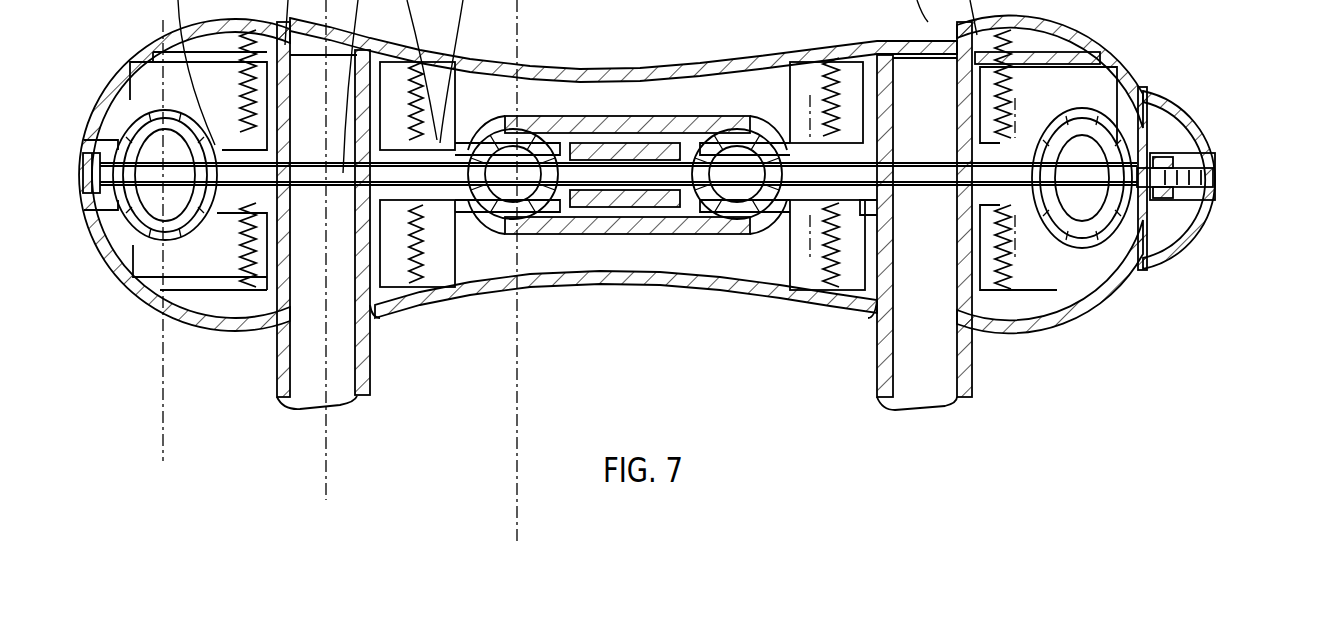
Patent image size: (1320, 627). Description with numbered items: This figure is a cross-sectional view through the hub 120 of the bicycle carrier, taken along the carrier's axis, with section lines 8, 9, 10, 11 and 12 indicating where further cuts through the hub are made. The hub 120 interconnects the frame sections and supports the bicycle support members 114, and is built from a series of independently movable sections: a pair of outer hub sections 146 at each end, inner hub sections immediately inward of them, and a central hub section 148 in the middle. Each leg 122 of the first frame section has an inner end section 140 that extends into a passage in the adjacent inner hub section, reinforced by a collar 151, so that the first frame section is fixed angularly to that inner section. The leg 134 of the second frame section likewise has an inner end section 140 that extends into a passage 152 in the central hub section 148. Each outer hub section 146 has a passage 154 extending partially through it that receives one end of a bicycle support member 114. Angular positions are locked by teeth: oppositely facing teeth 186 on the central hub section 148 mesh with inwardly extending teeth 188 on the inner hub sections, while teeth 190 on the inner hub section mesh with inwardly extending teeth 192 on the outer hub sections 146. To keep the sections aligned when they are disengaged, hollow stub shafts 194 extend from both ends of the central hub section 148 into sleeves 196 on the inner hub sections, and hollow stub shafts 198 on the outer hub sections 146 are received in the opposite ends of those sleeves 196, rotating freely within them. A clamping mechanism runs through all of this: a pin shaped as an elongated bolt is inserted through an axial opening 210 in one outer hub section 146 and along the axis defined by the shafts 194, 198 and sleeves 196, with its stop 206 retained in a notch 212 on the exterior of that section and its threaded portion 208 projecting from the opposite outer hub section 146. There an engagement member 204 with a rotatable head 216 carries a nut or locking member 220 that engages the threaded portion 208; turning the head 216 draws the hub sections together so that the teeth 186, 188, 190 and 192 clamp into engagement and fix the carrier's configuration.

The section line 8- 8 is at (810, 95).
The section line 9- 9 is at (1015, 98).
The section line 10- 10 is at (163, 461).
The section line 11- 11 is at (326, 500).
The section line 12- 12 is at (517, 545).
The bicycle support member 114 is at (90, 240).
The hub 120 is at (584, 332).
The leg 122 is at (386, 383).
The leg 134 is at (508, 248).
The inner end section 140 is at (285, 358).
The outer hub section 146 is at (143, 300).
The central hub section 148 is at (660, 278).
The collar 151 is at (377, 318).
The passage 152 is at (713, 137).
The passage 154 is at (1138, 280).
The teeth 186 is at (795, 270).
The teeth 188 is at (878, 207).
The teeth 190 is at (975, 92).
The teeth 192 is at (982, 116).
The hollow stub shaft 194 is at (800, 160).
The sleeve 196 is at (828, 68).
The hollow stub shaft 198 is at (235, 305).
The engagement member 204 is at (1211, 102).
The stop 206 is at (82, 172).
The threaded portion 208 is at (1213, 182).
The axial opening 210 is at (97, 100).
The notch 212 is at (83, 140).
The head 216 is at (1188, 107).
The locking member 220 is at (1215, 197).